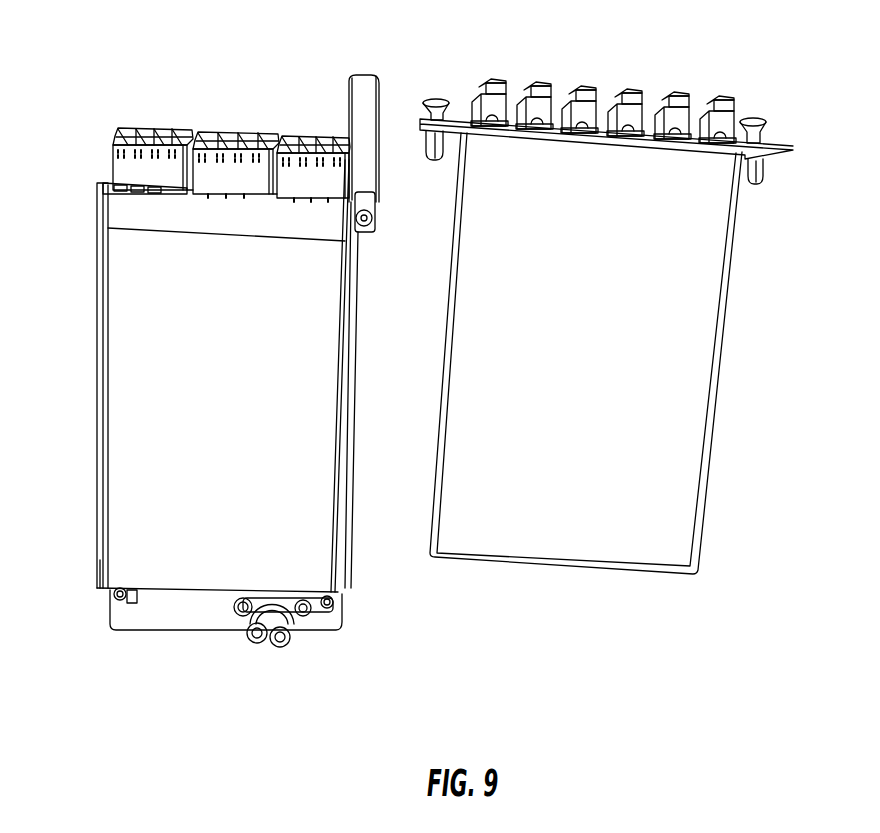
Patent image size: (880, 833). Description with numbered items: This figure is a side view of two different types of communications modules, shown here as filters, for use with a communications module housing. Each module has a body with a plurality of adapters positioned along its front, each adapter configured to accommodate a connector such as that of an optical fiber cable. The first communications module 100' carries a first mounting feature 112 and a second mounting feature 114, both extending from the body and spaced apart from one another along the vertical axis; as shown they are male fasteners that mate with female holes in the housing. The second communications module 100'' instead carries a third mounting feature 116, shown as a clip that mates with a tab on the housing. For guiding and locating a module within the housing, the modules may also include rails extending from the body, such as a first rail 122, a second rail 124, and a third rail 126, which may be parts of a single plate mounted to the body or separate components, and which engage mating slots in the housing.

The first communications module 100' is at (620, 379).
The second communications module 100'' is at (218, 415).
The first mounting feature 112 is at (435, 87).
The second mounting feature 114 is at (759, 106).
The third mounting feature 116 is at (279, 664).
The first rail 122 is at (100, 556).
The second rail 124 is at (368, 306).
The third rail 126 is at (137, 614).